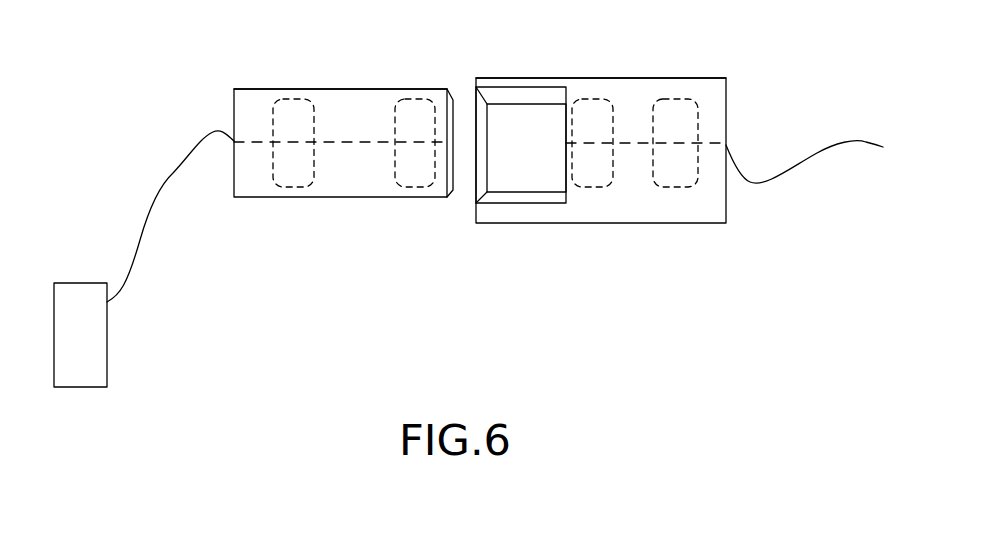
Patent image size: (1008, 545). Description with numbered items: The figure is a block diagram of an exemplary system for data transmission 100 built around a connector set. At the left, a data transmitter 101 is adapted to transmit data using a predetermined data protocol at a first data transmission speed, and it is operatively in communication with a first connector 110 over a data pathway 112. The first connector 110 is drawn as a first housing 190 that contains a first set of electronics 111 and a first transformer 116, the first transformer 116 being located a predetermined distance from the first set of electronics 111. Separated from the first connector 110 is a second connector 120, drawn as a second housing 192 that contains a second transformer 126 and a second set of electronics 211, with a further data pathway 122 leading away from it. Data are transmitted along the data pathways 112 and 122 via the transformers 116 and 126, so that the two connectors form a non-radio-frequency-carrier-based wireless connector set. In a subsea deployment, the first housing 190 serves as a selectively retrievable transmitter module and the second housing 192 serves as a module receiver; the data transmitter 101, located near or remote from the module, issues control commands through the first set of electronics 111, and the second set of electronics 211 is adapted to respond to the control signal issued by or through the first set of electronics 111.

The system for data transmission 100 is at (496, 304).
The data transmitter 101 is at (87, 335).
The first connector 110 is at (315, 197).
The first set of electronics 111 is at (308, 101).
The data pathway 112 is at (173, 173).
The first transformer 116 is at (423, 187).
The second connector 120 is at (565, 223).
The data pathway 122 is at (817, 153).
The second transformer 126 is at (602, 187).
The first housing 190 is at (302, 89).
The second housing 192 is at (625, 78).
The second set of electronics 211 is at (670, 99).